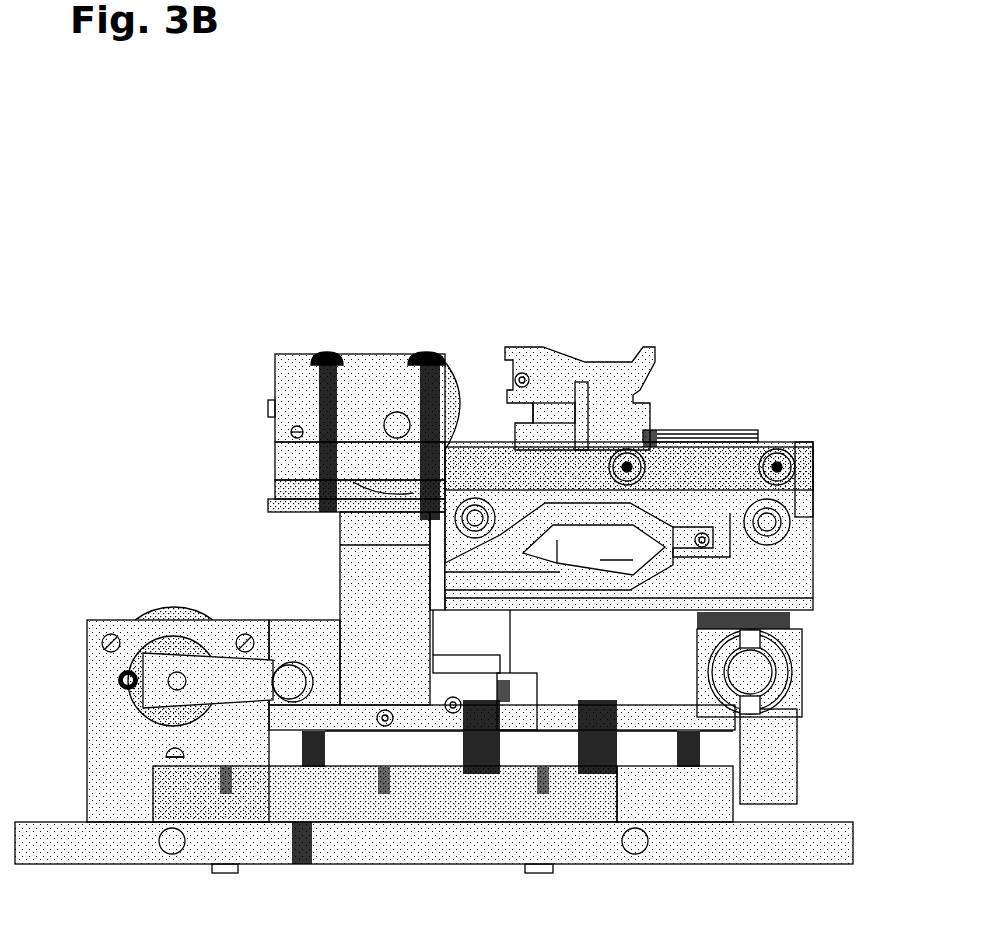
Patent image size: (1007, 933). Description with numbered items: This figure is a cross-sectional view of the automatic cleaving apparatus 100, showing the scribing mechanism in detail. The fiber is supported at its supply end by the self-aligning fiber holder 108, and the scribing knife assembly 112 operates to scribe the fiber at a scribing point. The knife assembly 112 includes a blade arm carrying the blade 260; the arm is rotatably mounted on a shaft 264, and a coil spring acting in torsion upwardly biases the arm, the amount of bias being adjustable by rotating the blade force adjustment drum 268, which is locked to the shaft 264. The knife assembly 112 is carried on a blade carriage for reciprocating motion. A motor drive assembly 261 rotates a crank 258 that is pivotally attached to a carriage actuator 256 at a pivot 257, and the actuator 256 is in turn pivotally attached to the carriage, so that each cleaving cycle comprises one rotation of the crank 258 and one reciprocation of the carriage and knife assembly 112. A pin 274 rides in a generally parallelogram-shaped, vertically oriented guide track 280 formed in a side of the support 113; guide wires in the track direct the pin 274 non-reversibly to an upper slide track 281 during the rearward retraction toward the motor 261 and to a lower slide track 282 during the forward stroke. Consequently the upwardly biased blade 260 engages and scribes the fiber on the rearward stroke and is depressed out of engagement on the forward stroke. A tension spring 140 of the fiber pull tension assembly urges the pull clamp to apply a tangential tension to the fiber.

The automatic cleaving apparatus 100 is at (155, 240).
The self-aligning fiber holder 108 is at (606, 370).
The scribing knife assembly 112 is at (292, 370).
The support 113 is at (800, 545).
The tension spring 140 is at (725, 710).
The carriage actuator 256 is at (330, 662).
The pivot 257 is at (290, 660).
The crank 258 is at (205, 668).
The blade 260 is at (668, 432).
The motor drive assembly 261 is at (160, 607).
The shaft 264 is at (393, 413).
The blade force adjustment drum 268 is at (460, 400).
The pin 274 is at (705, 548).
The guide track 280 is at (455, 566).
The upper slide track 281 is at (578, 503).
The lower slide track 282 is at (600, 562).